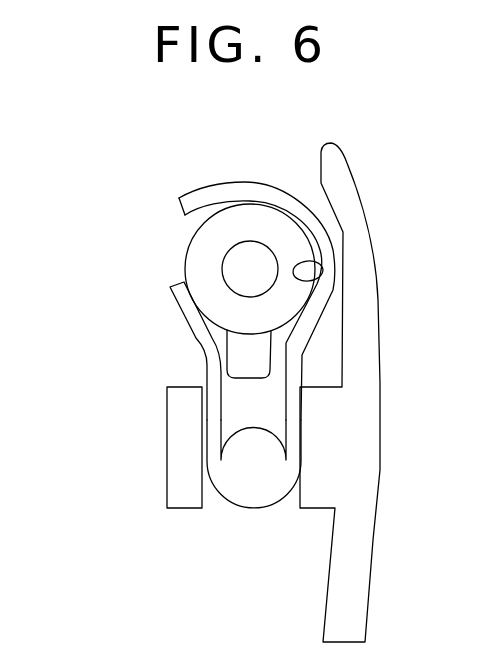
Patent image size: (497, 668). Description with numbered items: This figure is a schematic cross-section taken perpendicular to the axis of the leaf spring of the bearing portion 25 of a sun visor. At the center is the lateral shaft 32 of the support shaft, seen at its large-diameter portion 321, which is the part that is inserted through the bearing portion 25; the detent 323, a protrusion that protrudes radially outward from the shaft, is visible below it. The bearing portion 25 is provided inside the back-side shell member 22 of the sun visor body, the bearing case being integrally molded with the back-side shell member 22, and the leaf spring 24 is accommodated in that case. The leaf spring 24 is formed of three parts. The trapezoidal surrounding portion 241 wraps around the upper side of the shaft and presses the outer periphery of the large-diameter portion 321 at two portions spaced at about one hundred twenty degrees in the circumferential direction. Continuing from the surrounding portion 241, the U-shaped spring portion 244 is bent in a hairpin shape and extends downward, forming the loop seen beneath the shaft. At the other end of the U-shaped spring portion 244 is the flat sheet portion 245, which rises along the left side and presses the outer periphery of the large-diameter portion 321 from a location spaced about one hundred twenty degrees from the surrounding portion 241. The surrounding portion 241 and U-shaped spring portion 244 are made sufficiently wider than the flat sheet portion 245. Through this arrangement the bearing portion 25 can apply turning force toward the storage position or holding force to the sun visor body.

The back-side shell member 22 is at (318, 443).
The leaf spring 24 is at (254, 352).
The bearing portion 25 is at (292, 169).
The lateral shaft 32 is at (175, 296).
The large-diameter portion 321 is at (205, 264).
The detent 323 is at (240, 343).
The surrounding portion 241 is at (322, 281).
The U-shaped spring portion 244 is at (268, 484).
The flat sheet portion 245 is at (178, 320).